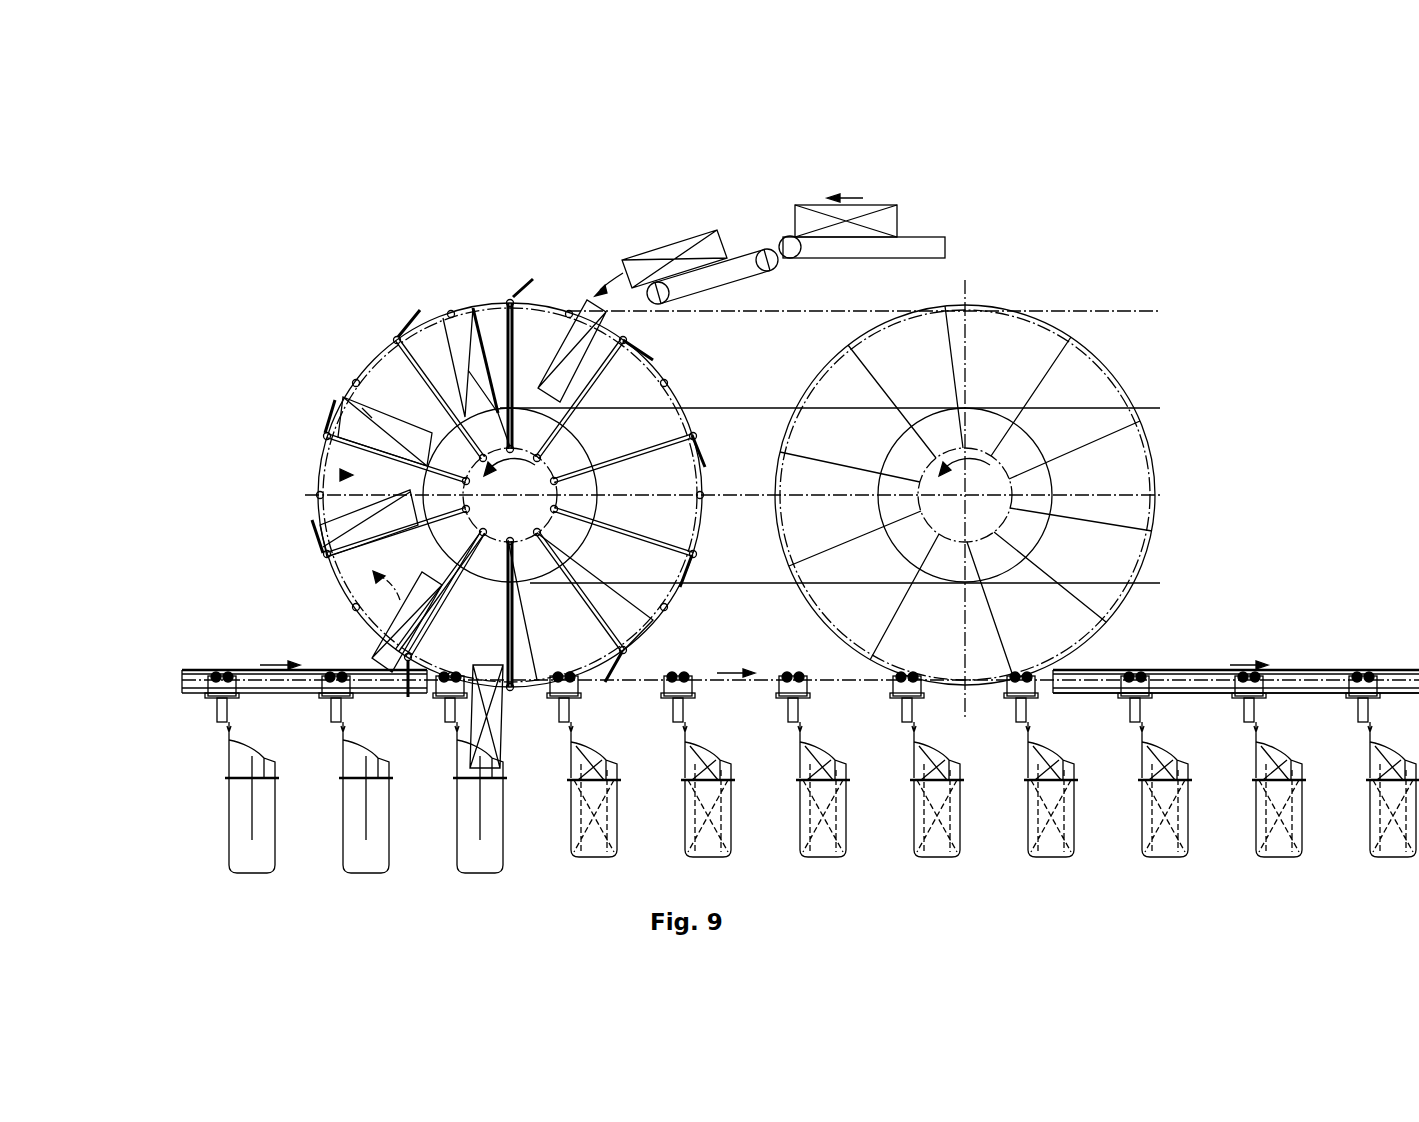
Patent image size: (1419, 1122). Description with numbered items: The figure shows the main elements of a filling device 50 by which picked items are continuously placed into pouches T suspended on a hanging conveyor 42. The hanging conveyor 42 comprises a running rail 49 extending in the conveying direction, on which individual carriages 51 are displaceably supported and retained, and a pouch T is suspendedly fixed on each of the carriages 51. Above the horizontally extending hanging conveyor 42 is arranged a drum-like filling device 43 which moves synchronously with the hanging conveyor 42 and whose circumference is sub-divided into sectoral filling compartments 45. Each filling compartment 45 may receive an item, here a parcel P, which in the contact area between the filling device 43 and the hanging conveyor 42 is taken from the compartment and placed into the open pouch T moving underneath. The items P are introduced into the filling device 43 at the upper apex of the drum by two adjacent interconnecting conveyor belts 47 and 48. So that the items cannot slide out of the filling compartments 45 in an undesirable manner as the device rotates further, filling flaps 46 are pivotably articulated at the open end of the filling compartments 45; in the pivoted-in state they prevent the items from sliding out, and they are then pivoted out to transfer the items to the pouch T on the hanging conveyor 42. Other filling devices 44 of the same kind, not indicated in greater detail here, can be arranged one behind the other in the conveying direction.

The hanging conveyor 42 is at (180, 657).
The filling device 43 is at (372, 353).
The other filling devices 44 is at (1112, 342).
The filling compartments 45 is at (340, 474).
The filling flaps 46 is at (327, 422).
The conveyor belt 47 is at (938, 243).
The conveyor belt 48 is at (740, 255).
The running rail 49 is at (1312, 668).
The filling device 50 is at (1128, 188).
The carriages 51 is at (222, 682).
The parcel P is at (885, 215).
The pouch T is at (245, 868).